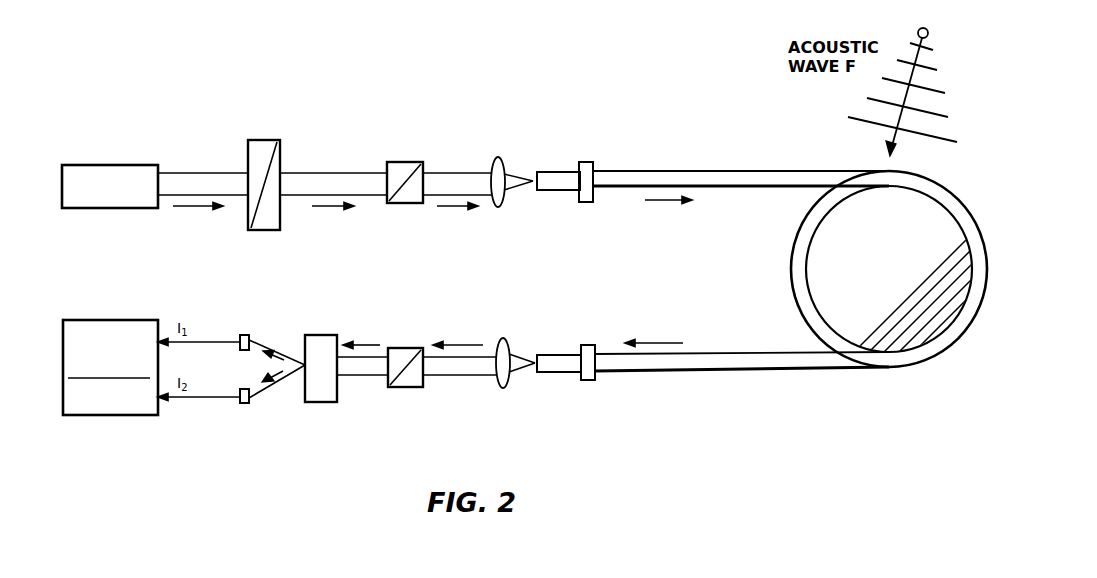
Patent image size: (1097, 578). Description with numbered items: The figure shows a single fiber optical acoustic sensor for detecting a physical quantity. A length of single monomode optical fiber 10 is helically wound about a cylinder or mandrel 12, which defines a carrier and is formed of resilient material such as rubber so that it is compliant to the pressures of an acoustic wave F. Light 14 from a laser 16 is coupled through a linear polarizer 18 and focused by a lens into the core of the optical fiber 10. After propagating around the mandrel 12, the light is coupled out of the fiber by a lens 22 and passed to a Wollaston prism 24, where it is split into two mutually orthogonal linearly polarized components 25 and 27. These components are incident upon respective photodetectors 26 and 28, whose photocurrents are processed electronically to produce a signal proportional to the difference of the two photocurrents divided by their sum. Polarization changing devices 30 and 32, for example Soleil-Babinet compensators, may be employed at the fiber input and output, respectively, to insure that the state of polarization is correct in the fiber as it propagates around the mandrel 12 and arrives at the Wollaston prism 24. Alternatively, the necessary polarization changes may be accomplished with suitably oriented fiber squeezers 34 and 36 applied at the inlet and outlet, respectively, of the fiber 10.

The single monomode optical fiber 10 is at (717, 170).
The mandrel 12 is at (791, 249).
The light 14 is at (199, 172).
The laser 16 is at (127, 165).
The linear polarizer 18 is at (266, 140).
The lens 22 is at (507, 388).
The Wollaston prism 24 is at (330, 402).
The linearly polarized component 25 is at (283, 352).
The photodetector 26 is at (246, 335).
The linearly polarized component 27 is at (288, 376).
The photodetector 28 is at (243, 404).
The polarization changing device 30 is at (404, 162).
The polarization changing device 32 is at (405, 387).
The fiber squeezer 34 is at (587, 162).
The fiber squeezer 36 is at (592, 380).